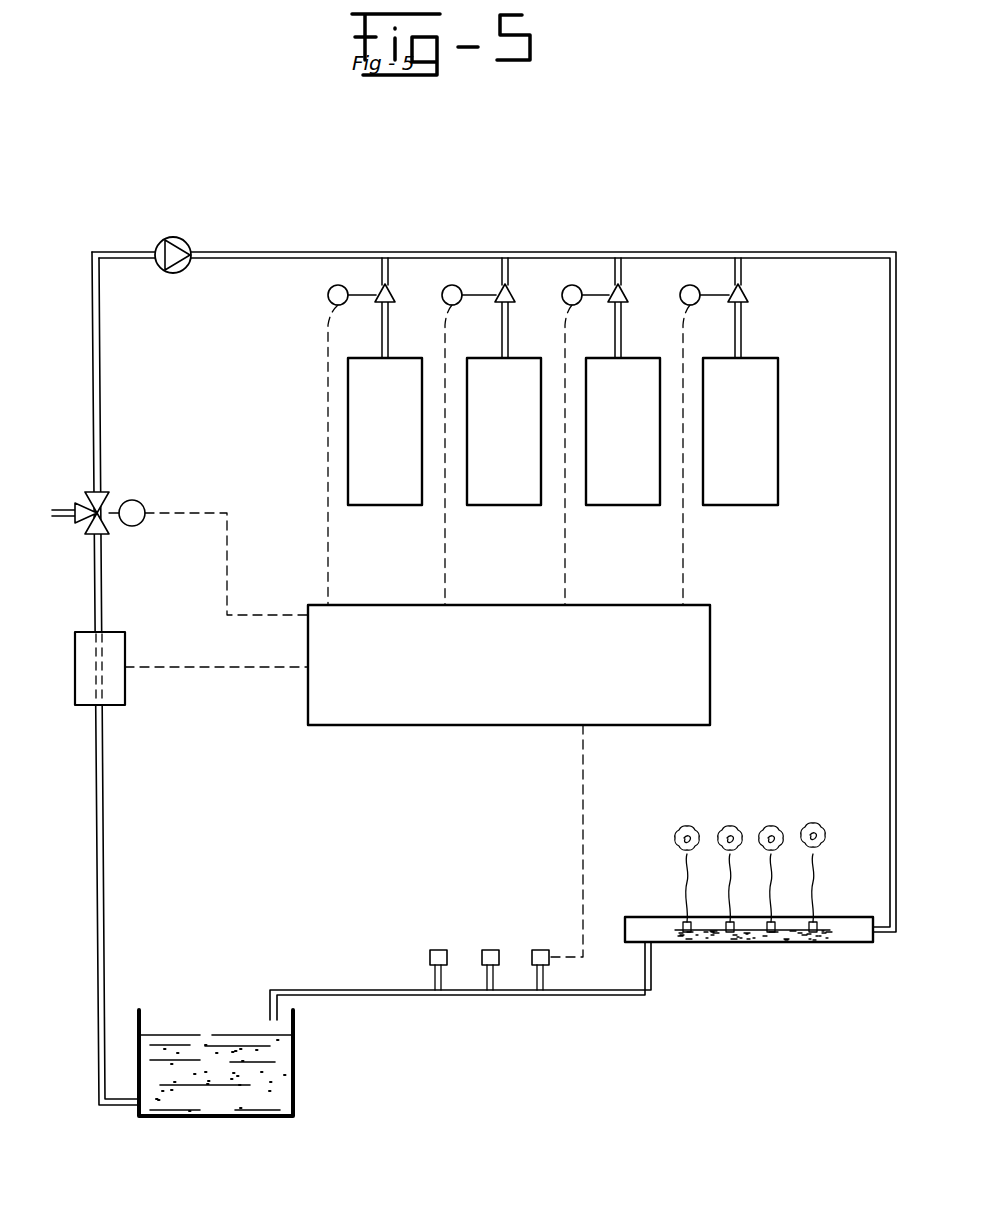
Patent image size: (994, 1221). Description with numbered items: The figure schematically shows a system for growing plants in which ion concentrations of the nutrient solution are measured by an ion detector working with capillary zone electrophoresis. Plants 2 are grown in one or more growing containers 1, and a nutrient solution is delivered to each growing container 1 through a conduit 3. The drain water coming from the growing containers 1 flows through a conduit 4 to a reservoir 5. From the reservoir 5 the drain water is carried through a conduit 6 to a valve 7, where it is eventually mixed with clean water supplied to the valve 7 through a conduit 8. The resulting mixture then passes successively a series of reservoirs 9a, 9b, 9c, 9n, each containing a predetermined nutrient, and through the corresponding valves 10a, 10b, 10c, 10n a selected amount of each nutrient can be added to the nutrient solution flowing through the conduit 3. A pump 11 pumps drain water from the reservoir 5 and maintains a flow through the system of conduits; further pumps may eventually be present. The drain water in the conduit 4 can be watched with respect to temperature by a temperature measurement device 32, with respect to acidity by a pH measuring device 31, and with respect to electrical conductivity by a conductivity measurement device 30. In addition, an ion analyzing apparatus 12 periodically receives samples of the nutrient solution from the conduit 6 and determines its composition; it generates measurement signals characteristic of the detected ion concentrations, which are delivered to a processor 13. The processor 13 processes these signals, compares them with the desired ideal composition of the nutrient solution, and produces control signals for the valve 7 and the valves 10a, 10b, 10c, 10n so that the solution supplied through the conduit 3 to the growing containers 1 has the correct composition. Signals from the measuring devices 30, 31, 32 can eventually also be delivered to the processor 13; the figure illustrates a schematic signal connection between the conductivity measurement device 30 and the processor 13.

The growing container 1 is at (856, 941).
The plants 2 is at (802, 826).
The conduit 3 is at (890, 607).
The conduit 4 is at (393, 997).
The reservoir 5 is at (261, 1118).
The conduit 6 is at (106, 862).
The valve 7 is at (110, 506).
The conduit 8 is at (62, 509).
The reservoir 9a is at (388, 496).
The reservoir 9b is at (507, 496).
The reservoir 9c is at (627, 496).
The reservoir 9n is at (748, 496).
The valve 10a is at (396, 293).
The valve 10b is at (516, 293).
The valve 10c is at (629, 293).
The valve 10n is at (749, 293).
The pump 11 is at (182, 239).
The ion analyzing apparatus 12 is at (119, 697).
The processor 13 is at (401, 710).
The conductivity measurement device 30 is at (540, 950).
The pH measuring device 31 is at (490, 950).
The temperature measurement device 32 is at (438, 950).